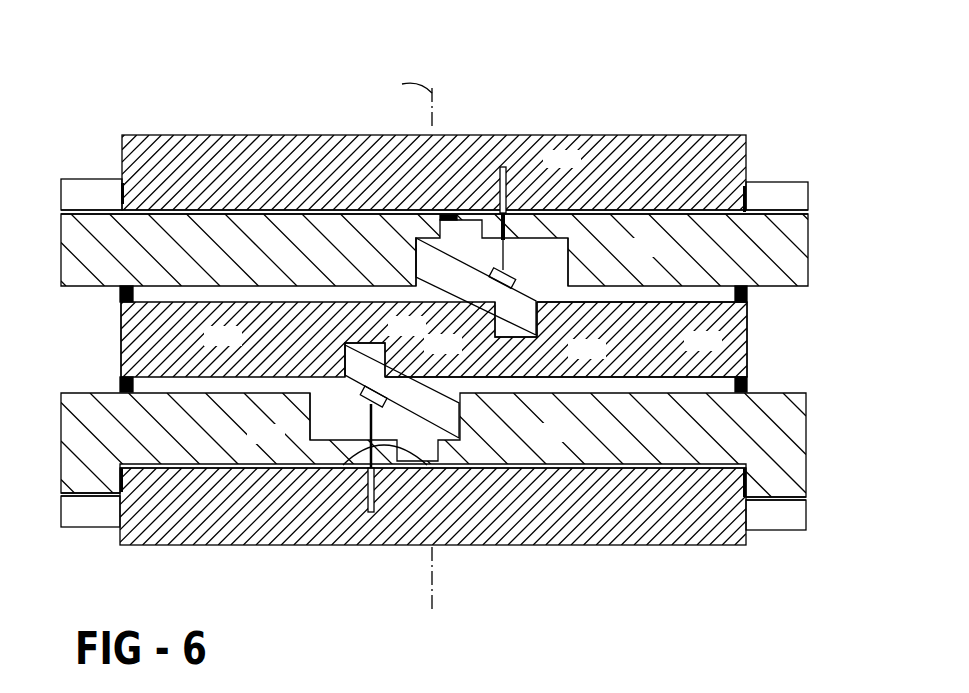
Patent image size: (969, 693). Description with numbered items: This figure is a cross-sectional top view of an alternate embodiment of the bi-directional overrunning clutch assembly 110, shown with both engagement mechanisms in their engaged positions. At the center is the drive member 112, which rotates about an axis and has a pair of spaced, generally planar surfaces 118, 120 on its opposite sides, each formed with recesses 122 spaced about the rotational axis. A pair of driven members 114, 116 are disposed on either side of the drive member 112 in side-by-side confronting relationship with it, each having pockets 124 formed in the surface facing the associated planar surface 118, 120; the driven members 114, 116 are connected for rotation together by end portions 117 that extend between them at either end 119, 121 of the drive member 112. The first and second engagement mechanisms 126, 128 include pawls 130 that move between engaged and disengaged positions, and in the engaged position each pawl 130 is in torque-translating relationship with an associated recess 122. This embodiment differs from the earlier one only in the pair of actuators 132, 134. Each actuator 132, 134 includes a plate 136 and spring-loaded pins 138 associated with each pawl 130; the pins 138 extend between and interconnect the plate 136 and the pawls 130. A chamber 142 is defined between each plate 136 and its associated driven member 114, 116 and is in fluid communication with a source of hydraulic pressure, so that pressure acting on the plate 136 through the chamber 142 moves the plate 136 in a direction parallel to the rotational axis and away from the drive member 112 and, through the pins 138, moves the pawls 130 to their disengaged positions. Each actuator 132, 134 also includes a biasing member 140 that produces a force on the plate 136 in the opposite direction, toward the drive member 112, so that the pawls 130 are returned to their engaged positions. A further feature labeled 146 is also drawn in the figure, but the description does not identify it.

The bi-directional overrunning clutch assembly 110 is at (449, 316).
The drive member 112 is at (748, 358).
The driven member 114 is at (809, 253).
The driven member 116 is at (808, 463).
The end portions 117 is at (120, 292).
The planar surface 118 is at (262, 300).
The end of drive member 119 is at (121, 345).
The planar surface 120 is at (615, 382).
The end of drive member 121 is at (747, 323).
The recess 122 is at (364, 342).
The pockets 124 is at (574, 256).
The first engagement mechanism 126 is at (392, 267).
The second engagement mechanism 128 is at (535, 452).
The pawl 130 is at (439, 263).
The actuator 132 is at (280, 134).
The actuator 134 is at (646, 547).
The plate 136 is at (645, 160).
The spring-loaded pins 138 is at (504, 223).
The biasing member 140 is at (503, 166).
The chamber 142 is at (90, 192).
The stops 146 is at (452, 216).